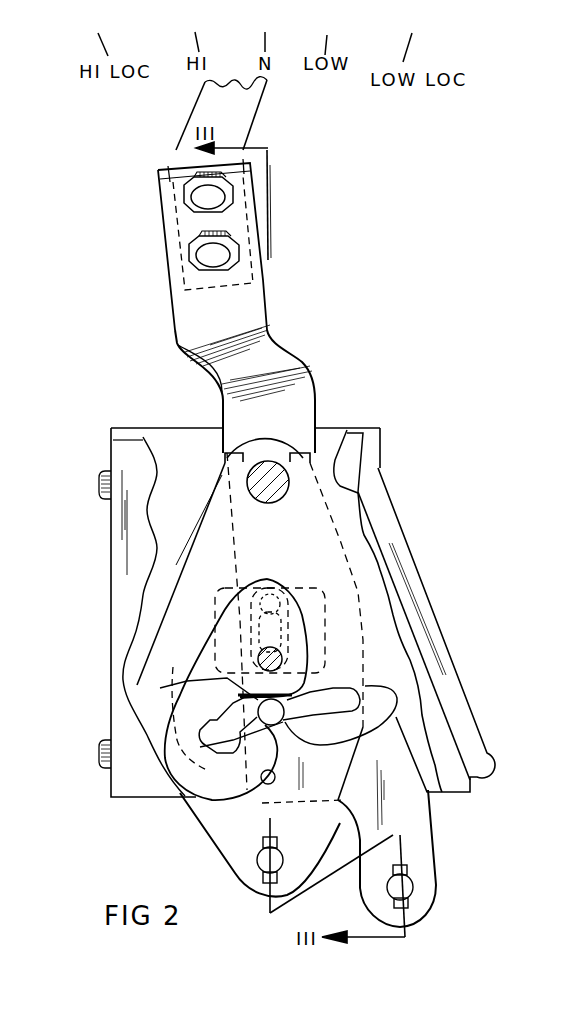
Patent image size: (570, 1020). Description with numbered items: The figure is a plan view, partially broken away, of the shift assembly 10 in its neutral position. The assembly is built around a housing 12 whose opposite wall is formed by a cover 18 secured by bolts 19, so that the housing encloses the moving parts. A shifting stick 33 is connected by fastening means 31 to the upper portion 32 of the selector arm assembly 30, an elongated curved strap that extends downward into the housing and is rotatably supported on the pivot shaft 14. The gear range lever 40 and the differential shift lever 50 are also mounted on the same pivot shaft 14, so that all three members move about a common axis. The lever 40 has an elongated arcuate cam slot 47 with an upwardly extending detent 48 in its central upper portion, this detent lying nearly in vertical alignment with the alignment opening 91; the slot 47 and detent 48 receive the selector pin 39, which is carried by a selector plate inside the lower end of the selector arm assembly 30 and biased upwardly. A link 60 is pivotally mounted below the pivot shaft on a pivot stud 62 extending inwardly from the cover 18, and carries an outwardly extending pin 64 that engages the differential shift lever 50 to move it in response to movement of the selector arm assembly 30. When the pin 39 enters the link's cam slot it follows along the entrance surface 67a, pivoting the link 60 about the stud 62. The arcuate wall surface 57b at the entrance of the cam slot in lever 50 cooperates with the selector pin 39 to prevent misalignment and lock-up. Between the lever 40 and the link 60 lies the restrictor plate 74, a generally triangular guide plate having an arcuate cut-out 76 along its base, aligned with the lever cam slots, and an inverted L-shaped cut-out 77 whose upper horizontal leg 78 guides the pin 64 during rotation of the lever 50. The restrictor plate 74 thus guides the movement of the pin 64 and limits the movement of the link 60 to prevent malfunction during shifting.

The shift assembly 10 is at (374, 381).
The housing 12 is at (389, 442).
The pivot shaft 14 is at (262, 475).
The cover 18 is at (118, 583).
The bolts 19 is at (98, 483).
The selector arm assembly 30 is at (299, 397).
The fastening means 31 is at (200, 196).
The upper portion 32 is at (253, 312).
The shifting stick 33 is at (242, 125).
The selector pin 39 is at (263, 705).
The gear range lever 40 is at (232, 841).
The cam slot 47 is at (300, 727).
The detent 48 is at (283, 725).
The differential shift lever 50 is at (428, 843).
The wall surface 57b is at (330, 661).
The link 60 is at (303, 623).
The pivot stud 62 is at (282, 656).
The pin 64 is at (322, 565).
The surface 67a is at (235, 722).
The restrictor plate 74 is at (305, 518).
The arcuate cut-out 76 is at (350, 697).
The inverted L-shaped cut-out 77 is at (365, 528).
The horizontal leg 78 is at (306, 570).
The alignment opening 91 is at (265, 784).